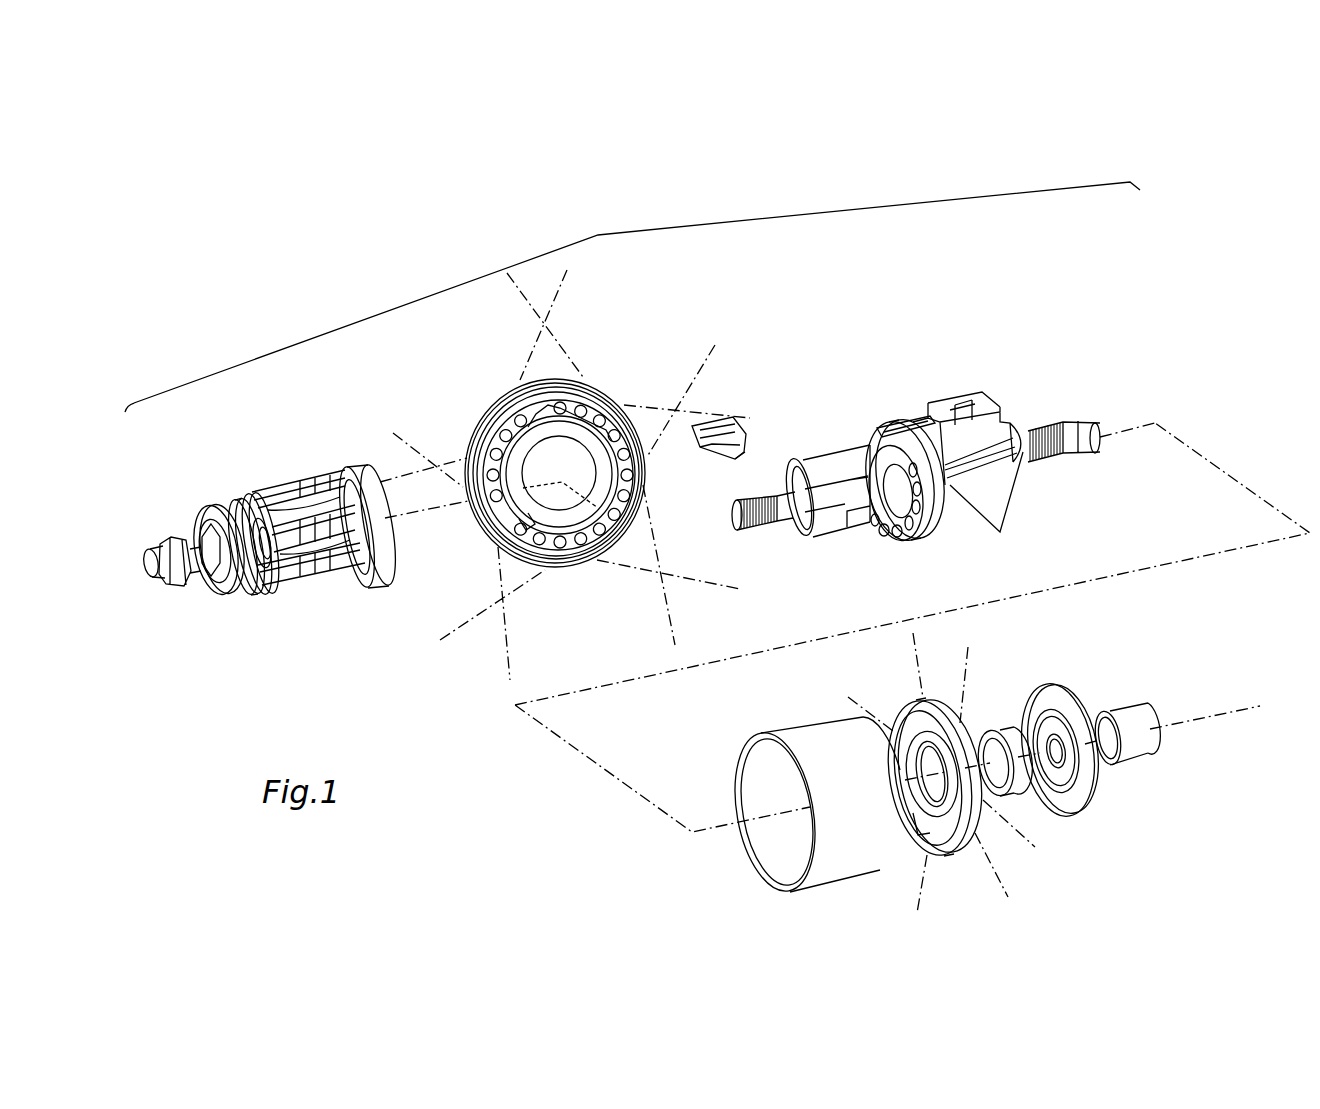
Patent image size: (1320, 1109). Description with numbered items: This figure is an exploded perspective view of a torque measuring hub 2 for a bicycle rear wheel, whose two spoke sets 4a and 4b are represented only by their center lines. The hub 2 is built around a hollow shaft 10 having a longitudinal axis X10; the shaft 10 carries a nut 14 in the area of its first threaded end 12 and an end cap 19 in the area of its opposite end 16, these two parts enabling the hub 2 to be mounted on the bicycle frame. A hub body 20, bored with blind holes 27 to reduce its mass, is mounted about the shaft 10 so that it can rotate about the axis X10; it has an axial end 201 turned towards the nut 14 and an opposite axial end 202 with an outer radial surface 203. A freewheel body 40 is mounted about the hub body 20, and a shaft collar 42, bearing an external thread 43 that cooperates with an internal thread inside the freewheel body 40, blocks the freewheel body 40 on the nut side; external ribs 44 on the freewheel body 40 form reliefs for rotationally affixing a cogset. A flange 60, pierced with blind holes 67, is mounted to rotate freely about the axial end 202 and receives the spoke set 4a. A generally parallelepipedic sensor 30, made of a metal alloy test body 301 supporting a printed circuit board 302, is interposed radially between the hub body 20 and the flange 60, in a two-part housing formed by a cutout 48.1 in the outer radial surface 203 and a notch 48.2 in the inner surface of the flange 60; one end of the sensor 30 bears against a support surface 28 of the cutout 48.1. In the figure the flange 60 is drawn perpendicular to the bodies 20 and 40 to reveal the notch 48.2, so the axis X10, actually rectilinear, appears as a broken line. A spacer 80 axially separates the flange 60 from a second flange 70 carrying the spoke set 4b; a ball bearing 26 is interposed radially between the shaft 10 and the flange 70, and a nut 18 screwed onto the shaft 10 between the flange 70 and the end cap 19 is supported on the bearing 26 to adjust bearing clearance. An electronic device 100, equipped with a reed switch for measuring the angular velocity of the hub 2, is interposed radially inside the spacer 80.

The torque measuring hub 2 is at (618, 235).
The spoke set 4a is at (575, 277).
The spoke set 4b is at (858, 700).
The hollow shaft 10 is at (785, 527).
The first threaded end 12 is at (757, 527).
The nut 14 is at (185, 582).
The end 16 is at (1100, 440).
The nut 18 is at (1065, 805).
The end cap 19 is at (1125, 762).
The hub body 20 is at (877, 476).
The ball bearing 26 is at (1000, 730).
The blind holes 27 is at (887, 540).
The support surface 28 is at (904, 399).
The sensor 30 is at (698, 457).
The freewheel body 40 is at (319, 529).
The shaft collar 42 is at (252, 592).
The external thread 43 is at (226, 505).
The external ribs 44 is at (352, 575).
The cutout 48.1 is at (918, 415).
The notch 48.2 is at (559, 414).
The flange 60 is at (536, 463).
The blind holes 67 is at (522, 407).
The second flange 70 is at (908, 702).
The spacer 80 is at (812, 807).
The electronic device 100 is at (1011, 452).
The axial end 201 is at (804, 462).
The axial end 202 is at (927, 517).
The outer radial surface 203 is at (960, 504).
The test body 301 is at (742, 458).
The printed circuit board 302 is at (700, 440).
The longitudinal axis X10 is at (1205, 455).